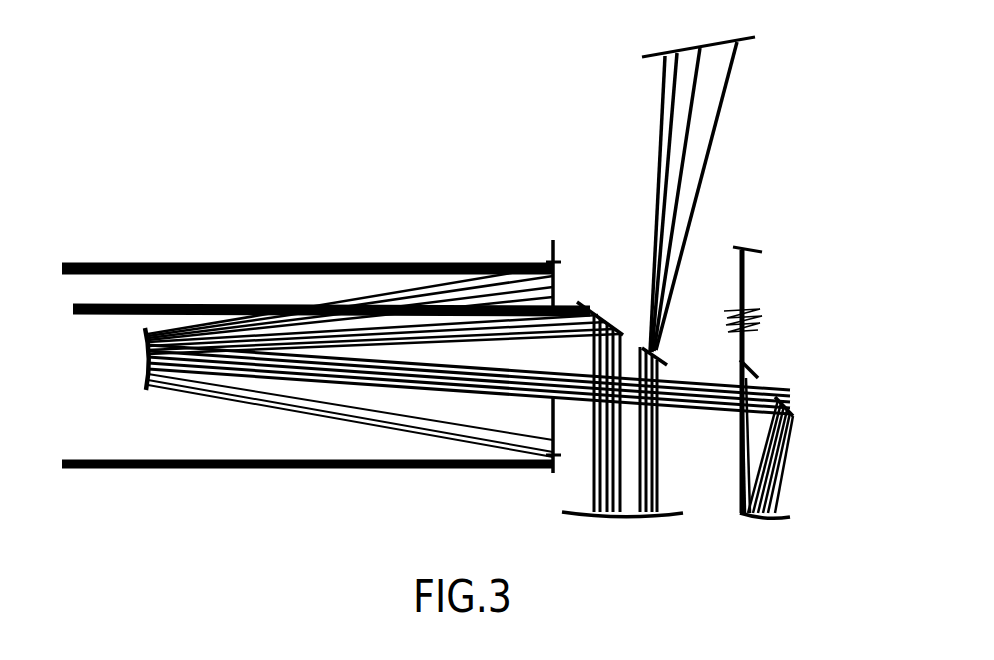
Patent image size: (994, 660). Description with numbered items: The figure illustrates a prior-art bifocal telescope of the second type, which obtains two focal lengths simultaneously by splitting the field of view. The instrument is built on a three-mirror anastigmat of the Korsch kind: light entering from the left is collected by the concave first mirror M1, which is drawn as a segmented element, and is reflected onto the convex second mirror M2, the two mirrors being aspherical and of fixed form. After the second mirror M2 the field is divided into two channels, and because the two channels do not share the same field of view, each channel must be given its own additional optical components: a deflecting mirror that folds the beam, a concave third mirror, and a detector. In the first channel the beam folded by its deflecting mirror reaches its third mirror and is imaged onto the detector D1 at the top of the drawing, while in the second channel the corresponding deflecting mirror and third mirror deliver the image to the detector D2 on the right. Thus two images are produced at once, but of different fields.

The first mirror M1 is at (556, 290).
The second mirror M2 is at (145, 379).
The detector D1 is at (703, 42).
The detector D2 is at (760, 251).